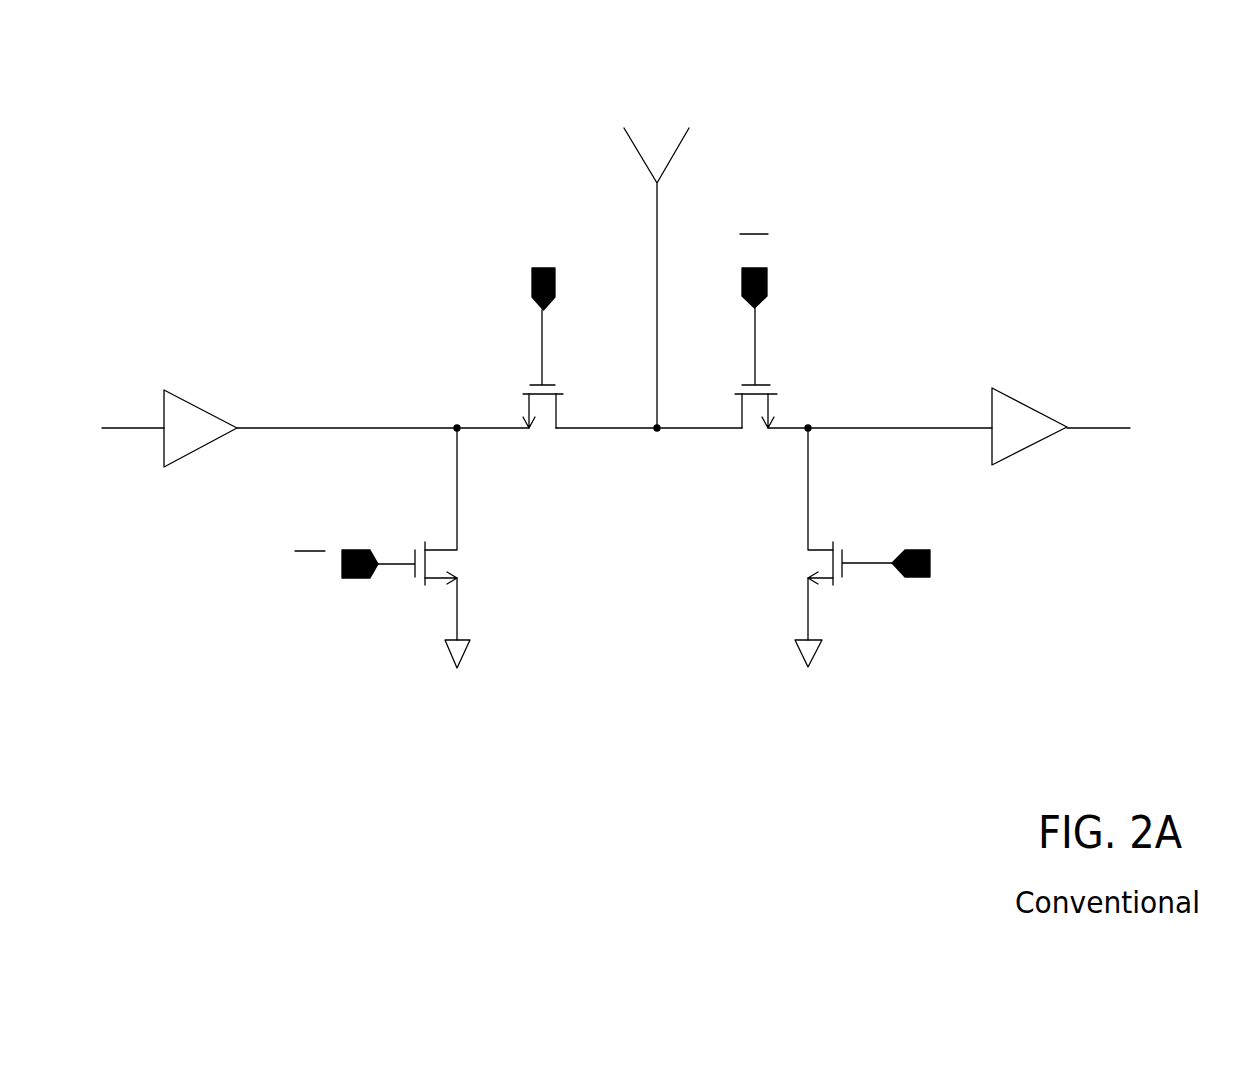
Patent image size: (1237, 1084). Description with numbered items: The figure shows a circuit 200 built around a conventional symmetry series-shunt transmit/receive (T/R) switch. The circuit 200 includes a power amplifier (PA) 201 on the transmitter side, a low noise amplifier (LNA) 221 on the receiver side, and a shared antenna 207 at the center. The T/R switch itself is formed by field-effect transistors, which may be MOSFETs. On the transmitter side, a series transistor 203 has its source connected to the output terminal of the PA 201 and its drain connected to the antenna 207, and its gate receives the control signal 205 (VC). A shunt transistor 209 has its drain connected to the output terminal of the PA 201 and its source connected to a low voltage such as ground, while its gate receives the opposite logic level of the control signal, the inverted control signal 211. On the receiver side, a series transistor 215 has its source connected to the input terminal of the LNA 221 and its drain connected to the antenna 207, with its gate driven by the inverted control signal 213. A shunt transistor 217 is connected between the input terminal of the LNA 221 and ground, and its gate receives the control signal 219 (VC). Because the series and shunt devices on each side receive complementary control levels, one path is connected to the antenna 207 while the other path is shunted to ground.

The circuit 200 is at (1100, 134).
The power amplifier (PA) 201 is at (164, 402).
The transistor 203 is at (520, 384).
The control signal (VC) 205 is at (526, 250).
The antenna 207 is at (623, 167).
The transistor 209 is at (407, 540).
The inverted control voltage supply 211 is at (312, 540).
The inverted control voltage supply 213 is at (778, 262).
The transistor 215 is at (778, 388).
The transistor 217 is at (792, 545).
The transistor 219 is at (945, 545).
The low noise amplifier (LNA) 221 is at (1018, 400).